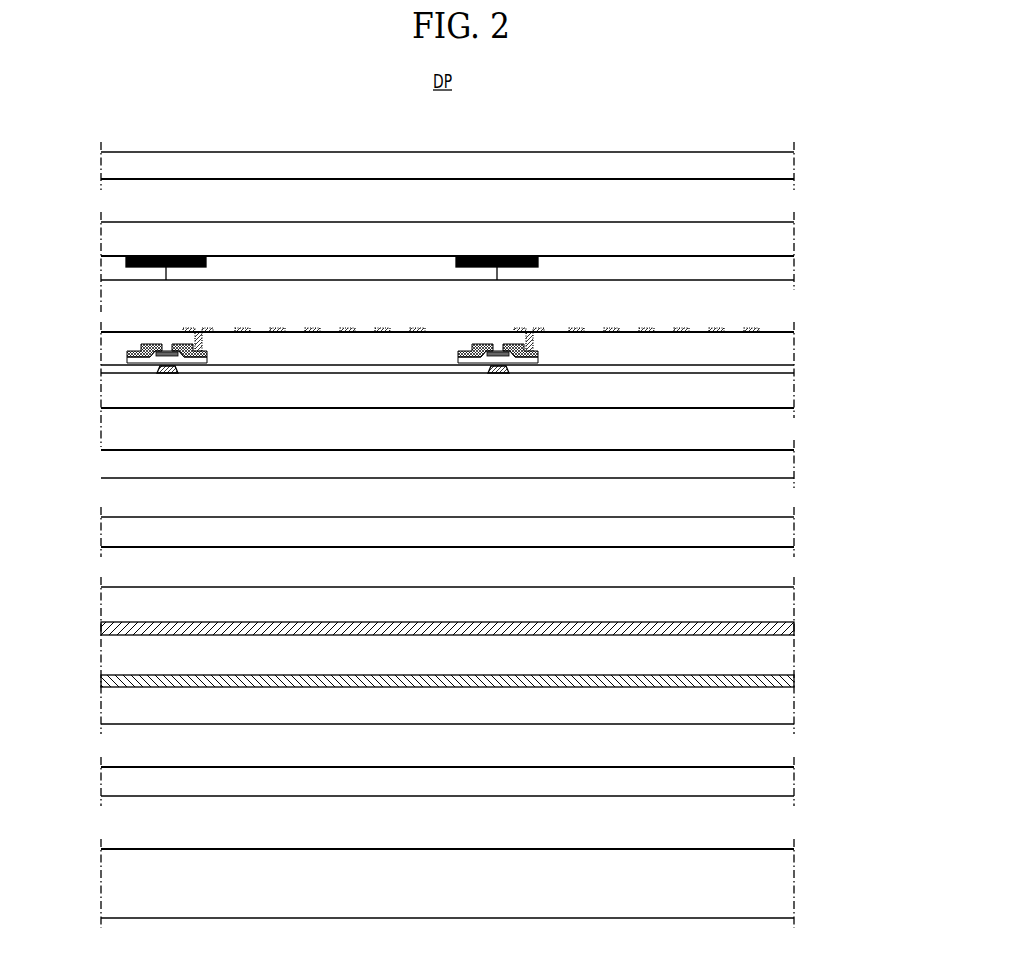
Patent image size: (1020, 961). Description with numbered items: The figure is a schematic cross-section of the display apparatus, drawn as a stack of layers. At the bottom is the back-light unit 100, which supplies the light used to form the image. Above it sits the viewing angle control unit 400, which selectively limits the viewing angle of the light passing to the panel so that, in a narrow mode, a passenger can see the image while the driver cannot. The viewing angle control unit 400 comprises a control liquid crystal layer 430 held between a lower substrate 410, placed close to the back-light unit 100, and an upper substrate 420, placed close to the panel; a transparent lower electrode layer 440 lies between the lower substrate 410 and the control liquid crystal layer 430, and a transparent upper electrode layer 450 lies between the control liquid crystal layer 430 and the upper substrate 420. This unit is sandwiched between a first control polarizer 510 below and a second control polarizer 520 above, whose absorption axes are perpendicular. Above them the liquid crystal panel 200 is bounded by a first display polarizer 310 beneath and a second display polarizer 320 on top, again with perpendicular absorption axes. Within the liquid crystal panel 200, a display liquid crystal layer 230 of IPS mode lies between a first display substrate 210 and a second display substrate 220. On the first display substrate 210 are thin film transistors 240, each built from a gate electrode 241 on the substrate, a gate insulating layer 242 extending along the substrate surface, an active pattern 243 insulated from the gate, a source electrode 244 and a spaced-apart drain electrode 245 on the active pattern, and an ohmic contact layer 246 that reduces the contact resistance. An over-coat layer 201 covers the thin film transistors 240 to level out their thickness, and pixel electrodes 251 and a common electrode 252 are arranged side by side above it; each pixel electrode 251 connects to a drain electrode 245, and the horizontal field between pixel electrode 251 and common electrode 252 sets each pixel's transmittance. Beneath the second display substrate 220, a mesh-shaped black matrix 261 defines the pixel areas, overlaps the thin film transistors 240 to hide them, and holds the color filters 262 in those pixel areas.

The back-light unit 100 is at (788, 882).
The liquid crystal panel 200 is at (851, 288).
The over-coat layer 201 is at (772, 353).
The first display substrate 210 is at (788, 387).
The second display substrate 220 is at (788, 243).
The display liquid crystal layer 230 is at (107, 299).
The thin film transistor 240 is at (400, 374).
The gate electrode 241 is at (155, 372).
The gate insulating layer 242 is at (133, 367).
The active pattern 243 is at (130, 360).
The source electrode 244 is at (141, 345).
The drain electrode 245 is at (173, 343).
The ohmic contact layer 246 is at (152, 353).
The pixel electrode 251 is at (762, 329).
The common electrode 252 is at (740, 341).
The black matrix 261 is at (126, 262).
The color filter 262 is at (788, 268).
The first display polarizer 310 is at (788, 463).
The second display polarizer 320 is at (788, 162).
The viewing angle control unit 400 is at (851, 645).
The lower substrate 410 is at (788, 698).
The upper substrate 420 is at (788, 602).
The control liquid crystal layer 430 is at (107, 655).
The lower electrode layer 440 is at (105, 680).
The upper electrode layer 450 is at (105, 627).
The first control polarizer 510 is at (107, 785).
The second control polarizer 520 is at (107, 533).